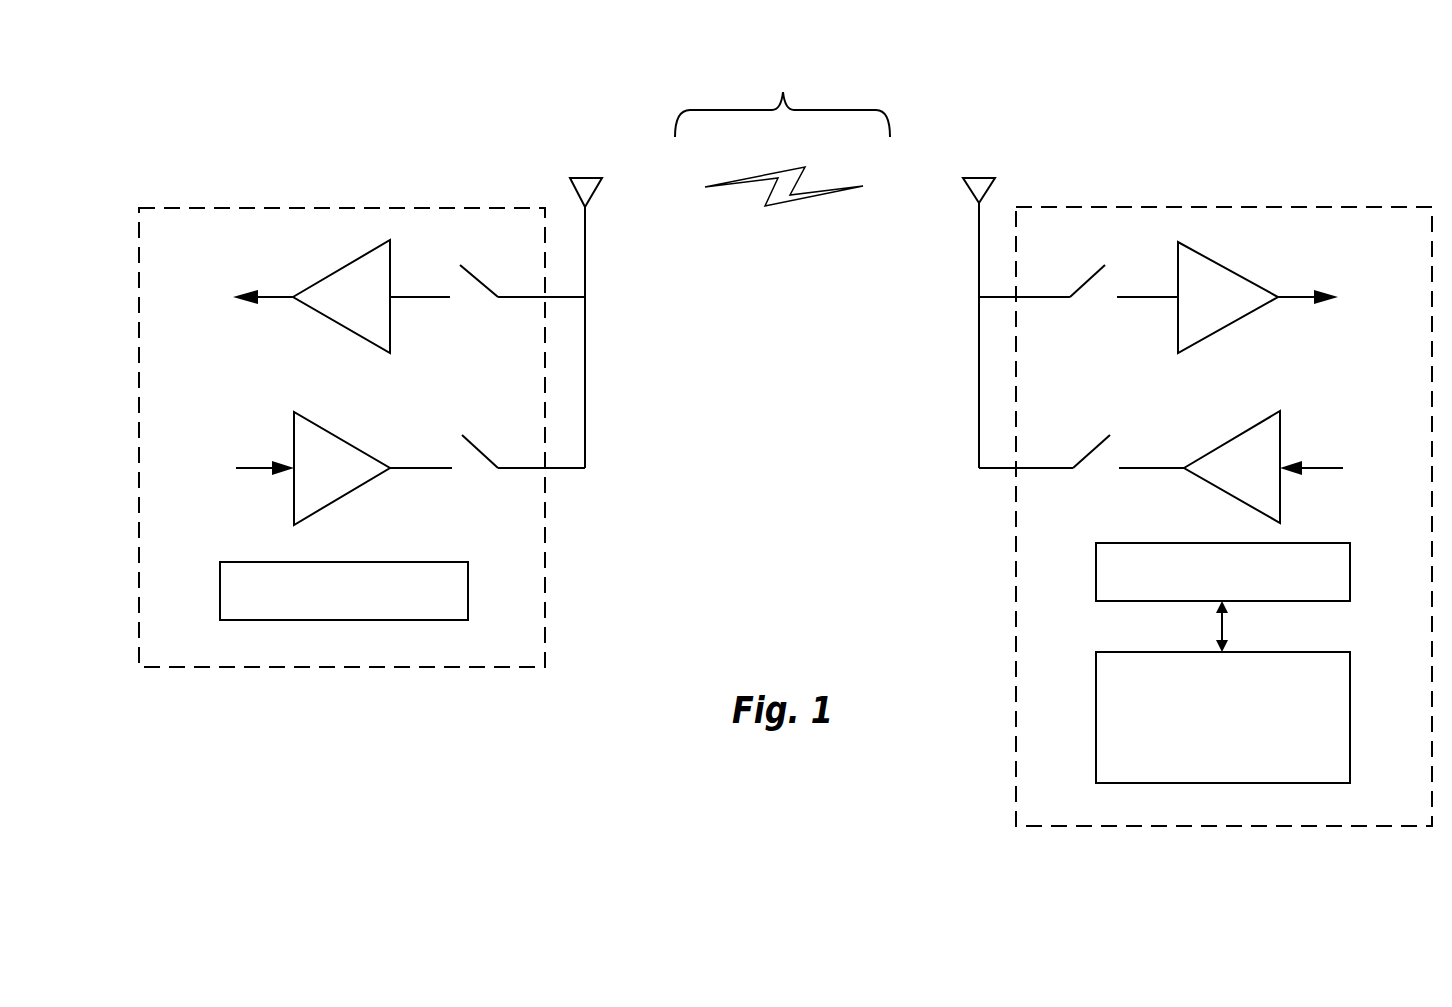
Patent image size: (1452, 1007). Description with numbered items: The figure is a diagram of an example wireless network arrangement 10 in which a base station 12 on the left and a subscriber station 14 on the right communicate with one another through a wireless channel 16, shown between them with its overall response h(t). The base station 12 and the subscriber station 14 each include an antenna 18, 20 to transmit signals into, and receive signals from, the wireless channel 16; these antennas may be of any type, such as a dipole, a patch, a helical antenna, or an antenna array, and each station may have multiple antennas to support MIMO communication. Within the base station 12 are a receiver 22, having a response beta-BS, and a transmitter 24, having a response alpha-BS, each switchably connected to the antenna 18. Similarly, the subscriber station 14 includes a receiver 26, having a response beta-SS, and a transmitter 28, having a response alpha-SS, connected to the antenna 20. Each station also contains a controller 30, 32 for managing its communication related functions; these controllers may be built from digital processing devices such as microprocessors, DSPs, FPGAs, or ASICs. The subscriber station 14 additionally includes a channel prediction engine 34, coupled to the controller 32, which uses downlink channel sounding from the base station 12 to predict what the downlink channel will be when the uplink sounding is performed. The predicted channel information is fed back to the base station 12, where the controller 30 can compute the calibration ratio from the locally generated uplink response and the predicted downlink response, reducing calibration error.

The wireless network arrangement 10 is at (274, 94).
The base station 12 is at (423, 208).
The subscriber station 14 is at (1310, 207).
The wireless channel 16 is at (782, 158).
The antenna 18 is at (600, 197).
The antenna 20 is at (966, 200).
The receiver 22 is at (357, 260).
The transmitter 24 is at (330, 427).
The receiver 26 is at (1210, 262).
The transmitter 28 is at (1248, 428).
The controller 30 is at (468, 578).
The controller 32 is at (1350, 560).
The channel prediction engine 34 is at (1350, 672).